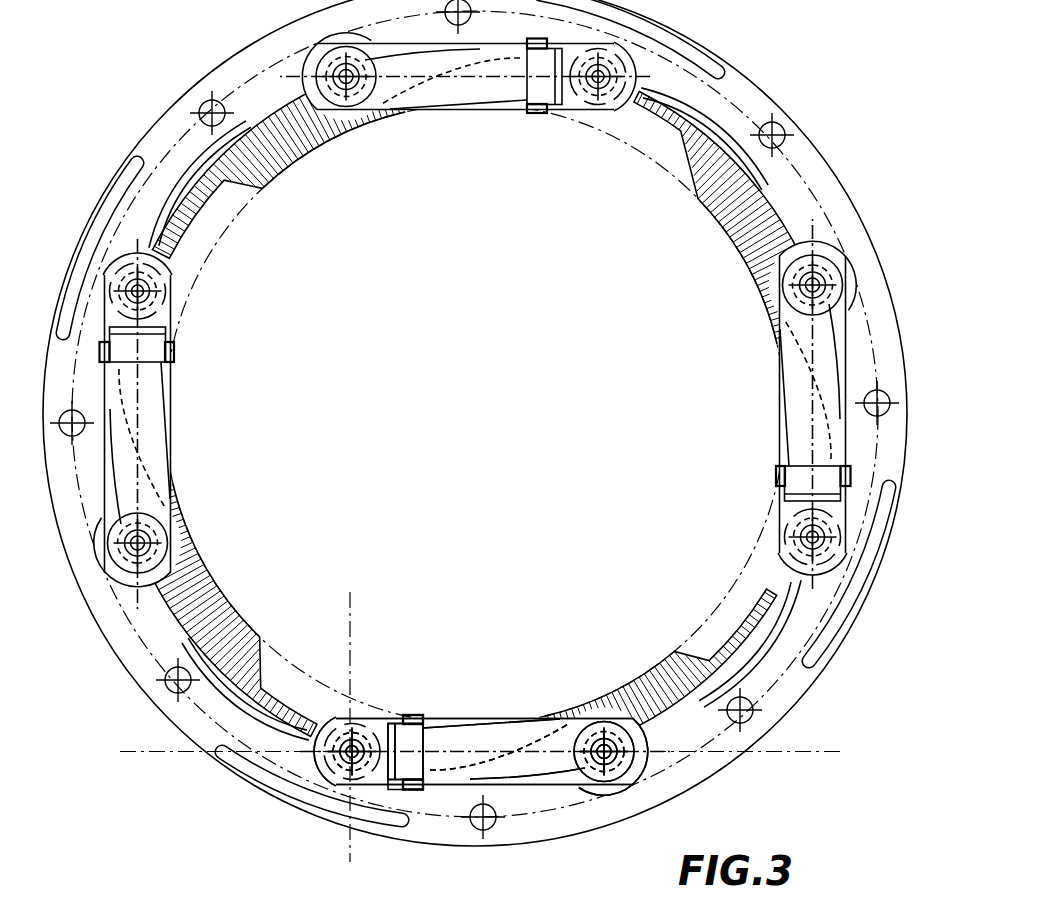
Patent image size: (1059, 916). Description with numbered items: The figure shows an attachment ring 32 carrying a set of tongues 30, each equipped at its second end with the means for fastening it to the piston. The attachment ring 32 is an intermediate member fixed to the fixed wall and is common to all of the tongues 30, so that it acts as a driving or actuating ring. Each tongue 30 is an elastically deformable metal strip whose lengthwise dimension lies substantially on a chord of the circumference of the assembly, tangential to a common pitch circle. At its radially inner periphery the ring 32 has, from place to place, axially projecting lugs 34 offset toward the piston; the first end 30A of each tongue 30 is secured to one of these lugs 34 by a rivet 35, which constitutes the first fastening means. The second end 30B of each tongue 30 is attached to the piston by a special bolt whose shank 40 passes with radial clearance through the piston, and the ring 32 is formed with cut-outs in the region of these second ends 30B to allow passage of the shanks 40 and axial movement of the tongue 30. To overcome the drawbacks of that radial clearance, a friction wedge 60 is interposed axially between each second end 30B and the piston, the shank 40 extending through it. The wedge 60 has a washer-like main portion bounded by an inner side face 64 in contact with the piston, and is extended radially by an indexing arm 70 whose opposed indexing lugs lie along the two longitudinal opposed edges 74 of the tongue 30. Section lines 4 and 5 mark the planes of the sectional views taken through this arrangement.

The attachment ring 32 is at (793, 98).
The tongue 30 is at (475, 465).
The lug 34 is at (212, 560).
The longitudinal opposed edge 74 is at (538, 717).
The first end 30A is at (628, 720).
The second end 30B is at (335, 768).
The rivet 35 is at (642, 760).
The friction wedge 60 is at (401, 740).
The inner side face 64 is at (383, 716).
The indexing arm 70 is at (428, 792).
The shank 40 is at (387, 790).
The section line 4- 4 is at (135, 703).
The section line 5- 5 is at (335, 614).